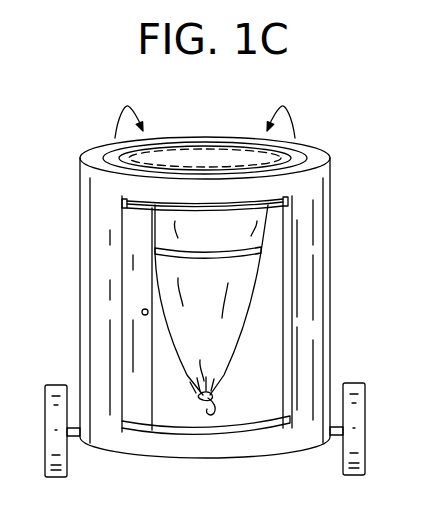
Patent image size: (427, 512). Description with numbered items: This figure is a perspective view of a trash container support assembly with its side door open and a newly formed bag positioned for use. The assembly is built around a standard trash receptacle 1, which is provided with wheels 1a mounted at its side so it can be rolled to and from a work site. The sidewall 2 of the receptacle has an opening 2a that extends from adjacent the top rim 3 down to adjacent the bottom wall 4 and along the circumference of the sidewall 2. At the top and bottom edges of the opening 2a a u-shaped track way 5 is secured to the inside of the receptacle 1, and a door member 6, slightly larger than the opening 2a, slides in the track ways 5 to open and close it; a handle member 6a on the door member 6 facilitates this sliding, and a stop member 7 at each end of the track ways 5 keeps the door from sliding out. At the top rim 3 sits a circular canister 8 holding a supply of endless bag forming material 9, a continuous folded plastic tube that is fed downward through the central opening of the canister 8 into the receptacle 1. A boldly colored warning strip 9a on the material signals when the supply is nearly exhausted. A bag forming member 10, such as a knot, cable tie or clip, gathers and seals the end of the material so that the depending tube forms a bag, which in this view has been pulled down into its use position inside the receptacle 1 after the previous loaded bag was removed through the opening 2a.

The trash receptacle 1 is at (332, 227).
The wheels 1a is at (366, 437).
The sidewall 2 is at (332, 320).
The opening 2a is at (253, 370).
The top rim 3 is at (333, 158).
The bottom wall 4 is at (253, 462).
The track way 5 is at (124, 200).
The door member 6 is at (140, 250).
The handle member 6a is at (142, 312).
The stop member 7 is at (289, 203).
The circular canister 8 is at (315, 150).
The endless bag forming material 9 is at (97, 150).
The warning strip 9a is at (259, 250).
The bag forming member 10 is at (228, 412).